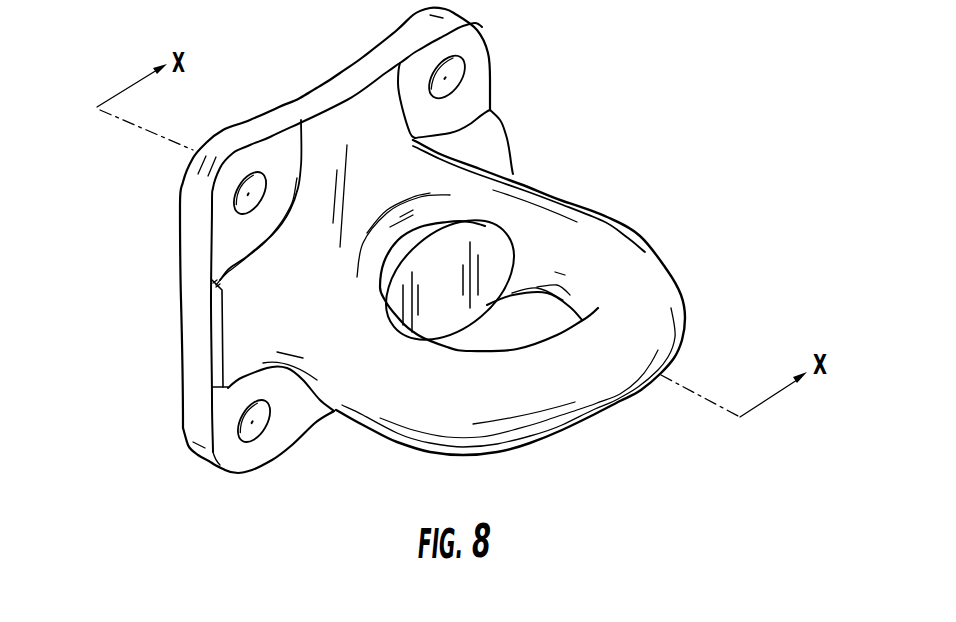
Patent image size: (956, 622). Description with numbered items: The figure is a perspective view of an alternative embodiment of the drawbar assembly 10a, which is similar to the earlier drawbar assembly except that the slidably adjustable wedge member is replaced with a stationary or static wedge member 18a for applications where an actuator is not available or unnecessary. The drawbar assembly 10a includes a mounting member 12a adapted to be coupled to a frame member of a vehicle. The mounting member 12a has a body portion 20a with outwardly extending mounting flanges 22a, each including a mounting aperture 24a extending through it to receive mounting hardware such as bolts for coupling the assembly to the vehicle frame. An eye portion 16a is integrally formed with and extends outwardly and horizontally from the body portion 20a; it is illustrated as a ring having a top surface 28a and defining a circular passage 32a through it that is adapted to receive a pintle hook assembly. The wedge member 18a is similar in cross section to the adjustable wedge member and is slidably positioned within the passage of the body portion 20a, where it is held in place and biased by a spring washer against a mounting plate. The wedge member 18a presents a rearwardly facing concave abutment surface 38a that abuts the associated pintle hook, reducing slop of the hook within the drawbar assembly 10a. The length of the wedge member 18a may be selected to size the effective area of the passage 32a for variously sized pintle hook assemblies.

The drawbar assembly 10a is at (394, 256).
The mounting member 12a is at (338, 238).
The eye portion 16a is at (608, 412).
The wedge member 18a is at (510, 307).
The body portion 20a is at (200, 347).
The mounting flange 22a is at (458, 60).
The mounting aperture 24a is at (485, 88).
The top surface 28a is at (597, 230).
The passage 32a is at (491, 341).
The abutment surface 38a is at (483, 260).